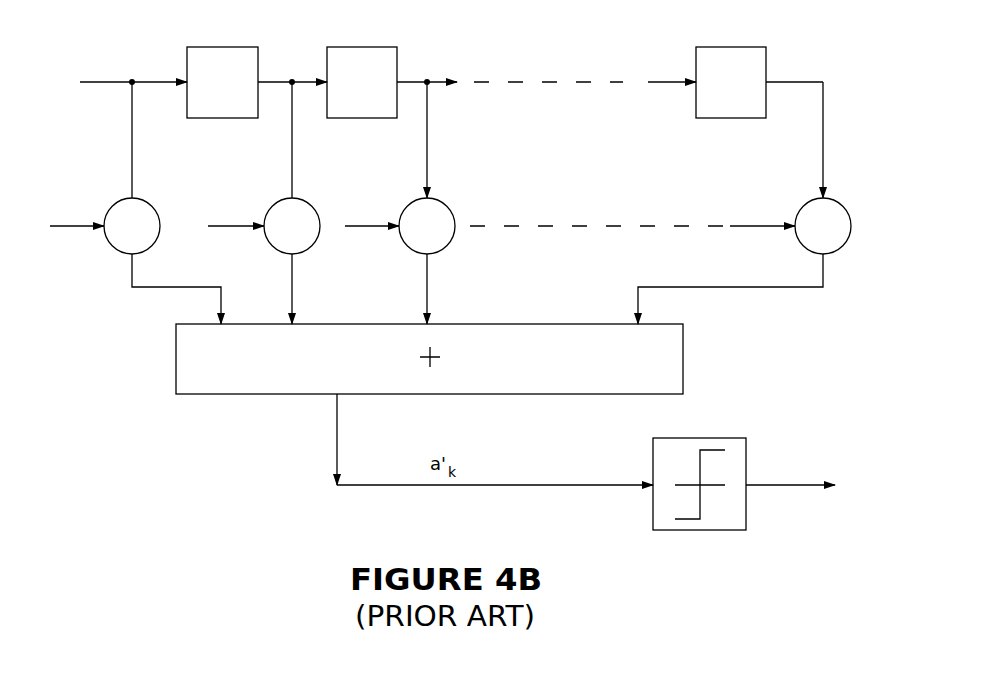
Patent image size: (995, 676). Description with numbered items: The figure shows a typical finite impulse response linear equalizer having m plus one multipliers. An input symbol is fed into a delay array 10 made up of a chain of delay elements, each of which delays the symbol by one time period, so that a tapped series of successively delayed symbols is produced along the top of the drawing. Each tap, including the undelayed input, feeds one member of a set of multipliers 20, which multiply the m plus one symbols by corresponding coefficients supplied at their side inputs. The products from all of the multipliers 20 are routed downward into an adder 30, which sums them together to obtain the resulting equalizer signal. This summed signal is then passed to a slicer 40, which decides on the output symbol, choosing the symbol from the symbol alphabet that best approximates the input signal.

The delay array 10 is at (823, 96).
The set of multipliers 20 is at (851, 236).
The adder 30 is at (683, 347).
The slicer 40 is at (746, 448).